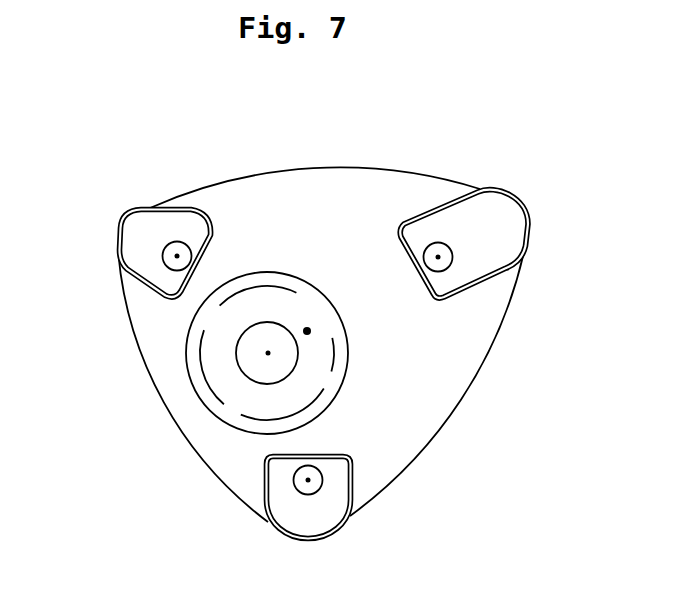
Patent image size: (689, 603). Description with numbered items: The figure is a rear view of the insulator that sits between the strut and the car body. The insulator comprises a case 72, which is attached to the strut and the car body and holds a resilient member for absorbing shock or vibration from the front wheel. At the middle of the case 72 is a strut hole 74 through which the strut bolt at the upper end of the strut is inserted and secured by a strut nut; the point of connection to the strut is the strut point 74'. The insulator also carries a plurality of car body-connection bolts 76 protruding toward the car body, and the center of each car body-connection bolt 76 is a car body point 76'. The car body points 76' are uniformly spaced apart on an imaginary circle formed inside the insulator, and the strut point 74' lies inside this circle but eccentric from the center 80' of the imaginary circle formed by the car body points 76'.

The case 72 is at (150, 317).
The strut hole 74 is at (189, 353).
The strut point 74' is at (194, 392).
The car body-connection bolt 76 is at (245, 503).
The car body point 76' is at (272, 527).
The center of the imaginary circle 80' is at (408, 377).